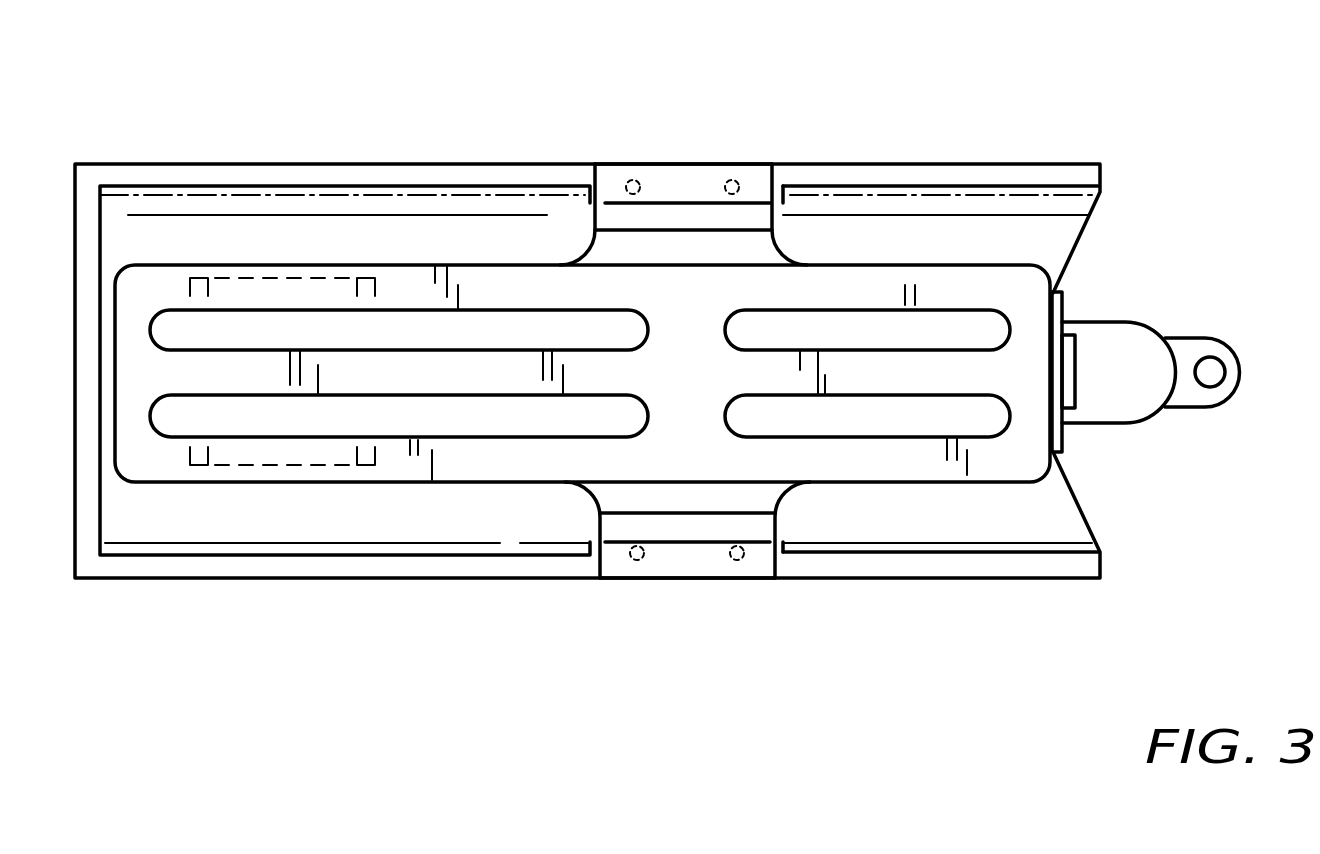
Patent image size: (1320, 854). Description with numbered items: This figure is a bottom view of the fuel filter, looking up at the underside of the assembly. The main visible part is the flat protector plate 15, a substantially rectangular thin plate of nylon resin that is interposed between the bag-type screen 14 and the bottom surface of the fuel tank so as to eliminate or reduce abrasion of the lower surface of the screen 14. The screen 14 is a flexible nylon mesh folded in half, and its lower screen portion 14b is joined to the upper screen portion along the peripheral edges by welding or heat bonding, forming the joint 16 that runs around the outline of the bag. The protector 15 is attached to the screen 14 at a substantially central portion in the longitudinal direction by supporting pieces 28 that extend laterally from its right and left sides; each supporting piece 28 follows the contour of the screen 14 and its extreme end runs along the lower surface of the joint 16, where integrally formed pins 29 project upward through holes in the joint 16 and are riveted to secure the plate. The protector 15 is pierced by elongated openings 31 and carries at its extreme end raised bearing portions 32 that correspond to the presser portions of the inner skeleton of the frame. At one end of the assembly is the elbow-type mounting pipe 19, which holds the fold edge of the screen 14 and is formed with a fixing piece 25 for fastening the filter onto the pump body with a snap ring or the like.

The screen 14 is at (985, 578).
The lower screen portion 14b is at (245, 218).
The protector plate 15 is at (467, 262).
The joint 16 is at (124, 570).
The mounting pipe 19 is at (1105, 345).
The fixing piece 25 is at (1195, 355).
The supporting piece 28 is at (680, 185).
The pin 29 is at (740, 180).
The elongated opening 31 is at (553, 310).
The raised bearing portion 32 is at (313, 278).